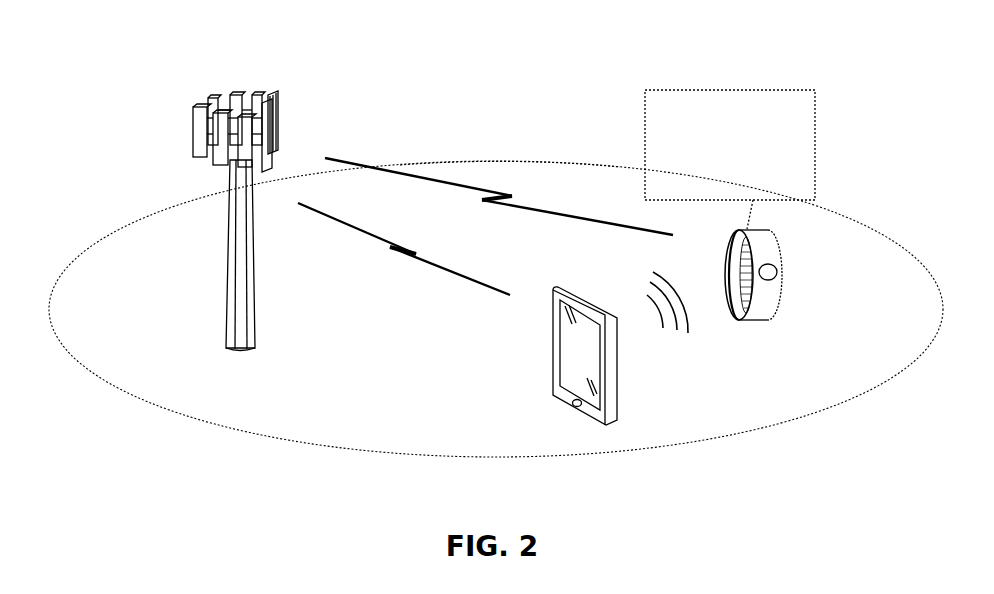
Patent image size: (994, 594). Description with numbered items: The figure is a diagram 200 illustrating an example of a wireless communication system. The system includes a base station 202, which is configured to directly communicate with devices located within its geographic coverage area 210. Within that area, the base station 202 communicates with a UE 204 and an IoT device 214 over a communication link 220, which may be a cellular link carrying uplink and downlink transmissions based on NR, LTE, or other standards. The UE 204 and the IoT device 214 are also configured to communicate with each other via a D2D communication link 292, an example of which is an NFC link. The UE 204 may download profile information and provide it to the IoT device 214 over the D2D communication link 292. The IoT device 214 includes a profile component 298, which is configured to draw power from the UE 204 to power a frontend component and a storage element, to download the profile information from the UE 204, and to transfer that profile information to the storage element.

The diagram 200 is at (254, 45).
The base station 202 is at (229, 283).
The UE 204 is at (590, 303).
The geographic coverage area 210 is at (505, 159).
The IoT device 214 is at (770, 232).
The communication link 220 is at (406, 248).
The D2D communication link 292 is at (675, 334).
The profile component 298 is at (768, 89).